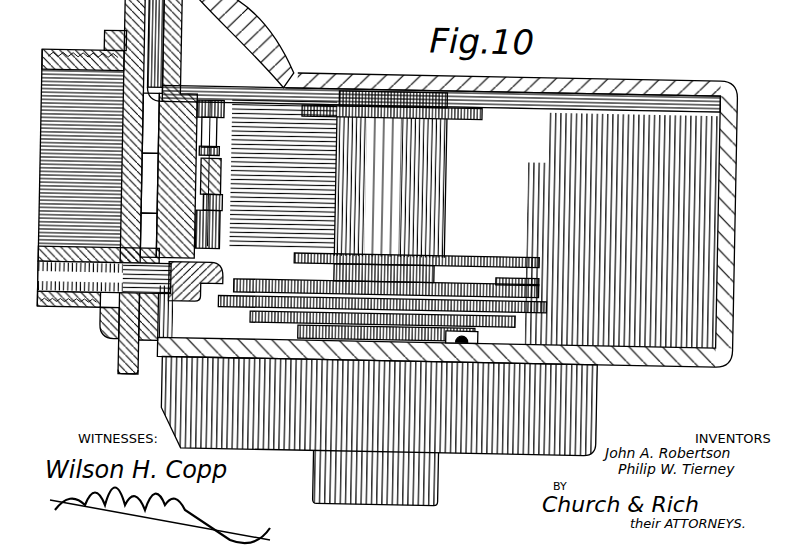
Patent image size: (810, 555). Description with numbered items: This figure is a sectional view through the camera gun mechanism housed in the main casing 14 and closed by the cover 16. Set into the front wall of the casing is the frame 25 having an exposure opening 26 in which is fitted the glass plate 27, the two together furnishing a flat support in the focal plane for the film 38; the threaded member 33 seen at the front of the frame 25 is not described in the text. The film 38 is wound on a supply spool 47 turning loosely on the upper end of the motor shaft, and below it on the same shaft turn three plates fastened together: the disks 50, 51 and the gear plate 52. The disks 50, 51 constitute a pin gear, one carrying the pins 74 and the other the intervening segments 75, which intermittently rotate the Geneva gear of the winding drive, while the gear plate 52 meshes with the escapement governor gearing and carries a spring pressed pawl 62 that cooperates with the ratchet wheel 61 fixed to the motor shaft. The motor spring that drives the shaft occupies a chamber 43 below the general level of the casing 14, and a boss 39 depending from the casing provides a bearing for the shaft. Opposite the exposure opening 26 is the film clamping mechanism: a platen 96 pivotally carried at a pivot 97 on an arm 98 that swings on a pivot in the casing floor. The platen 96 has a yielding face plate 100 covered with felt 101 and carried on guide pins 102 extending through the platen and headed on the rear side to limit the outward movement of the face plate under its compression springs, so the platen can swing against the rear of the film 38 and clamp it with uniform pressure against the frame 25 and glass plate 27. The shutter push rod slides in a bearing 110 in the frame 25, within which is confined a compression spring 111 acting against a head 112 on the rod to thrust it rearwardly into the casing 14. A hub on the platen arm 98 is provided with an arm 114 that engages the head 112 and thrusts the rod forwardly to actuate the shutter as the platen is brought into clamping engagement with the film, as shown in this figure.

The casing 14 is at (736, 220).
The cover 16 is at (346, 74).
The frame 25 is at (118, 60).
The exposure opening 26 is at (148, 132).
The glass plate 27 is at (160, 160).
The cap nut 33 is at (82, 73).
The film 38 is at (440, 197).
The boss 39 is at (445, 470).
The chamber 43 is at (377, 370).
The supply spool 47 is at (476, 120).
The disk 50 is at (310, 283).
The disk 51 is at (533, 312).
The gear plate 52 is at (481, 336).
The ratchet wheel 61 is at (392, 341).
The pawl 62 is at (315, 343).
The pins 74 is at (496, 283).
The segments 75 is at (450, 283).
The platen 96 is at (212, 130).
The pivot 97 is at (226, 182).
The arm 98 is at (226, 192).
The face plate 100 is at (168, 98).
The felt 101 is at (168, 206).
The guide pins 102 is at (226, 240).
The bearing 110 is at (76, 294).
The compression spring 111 is at (68, 248).
The head 112 is at (114, 338).
The arm 114 is at (226, 279).